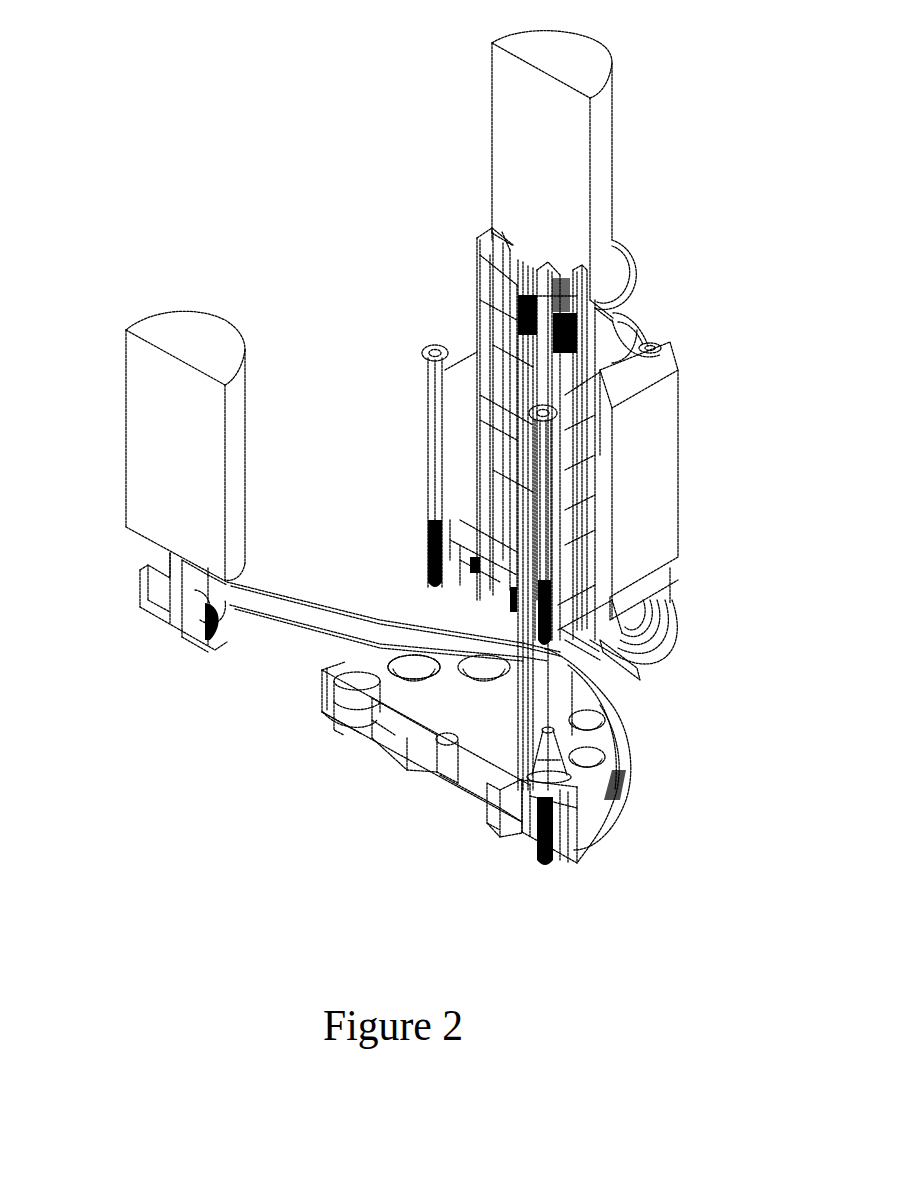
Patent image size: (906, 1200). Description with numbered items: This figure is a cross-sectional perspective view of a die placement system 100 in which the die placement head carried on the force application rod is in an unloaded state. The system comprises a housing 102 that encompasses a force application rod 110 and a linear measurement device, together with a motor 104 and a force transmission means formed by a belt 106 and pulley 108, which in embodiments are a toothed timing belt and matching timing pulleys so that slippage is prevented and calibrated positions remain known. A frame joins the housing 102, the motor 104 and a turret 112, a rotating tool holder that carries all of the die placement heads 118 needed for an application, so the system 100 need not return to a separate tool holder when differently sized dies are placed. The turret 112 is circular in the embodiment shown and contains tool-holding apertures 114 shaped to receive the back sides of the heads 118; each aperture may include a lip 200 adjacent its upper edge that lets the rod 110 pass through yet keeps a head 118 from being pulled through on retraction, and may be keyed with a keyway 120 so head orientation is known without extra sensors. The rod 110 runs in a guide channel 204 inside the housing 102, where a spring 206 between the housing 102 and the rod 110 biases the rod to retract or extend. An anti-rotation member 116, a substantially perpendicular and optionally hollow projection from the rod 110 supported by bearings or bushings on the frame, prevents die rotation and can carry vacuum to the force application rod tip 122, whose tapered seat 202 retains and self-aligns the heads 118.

The die placement system 100 is at (142, 122).
The housing 102 is at (680, 480).
The motor 104 is at (128, 328).
The belt 106 is at (350, 636).
The pulley 108 is at (147, 605).
The force application rod 110 is at (565, 745).
The turret 112 is at (377, 663).
The tool-holding aperture 114 is at (398, 660).
The anti-rotation member 116 is at (610, 668).
The die placement head 118 is at (558, 852).
The keyway 120 is at (565, 792).
The force application rod tip 122 is at (530, 778).
The lip 200 is at (340, 716).
The tapered seat 202 is at (553, 773).
The guide channel 204 is at (525, 525).
The spring 206 is at (533, 455).